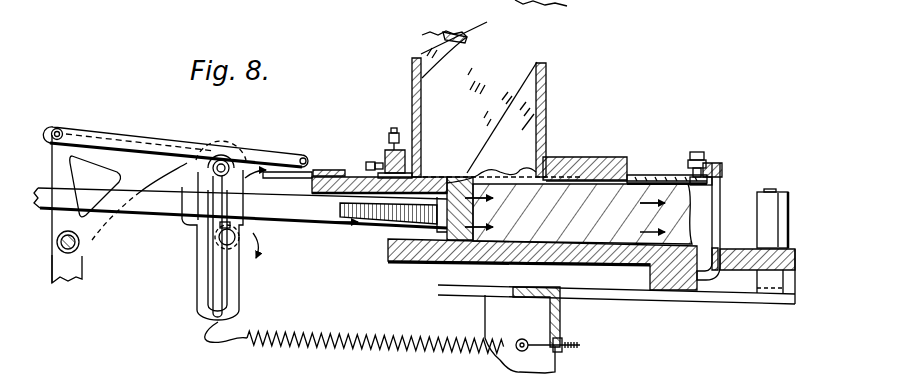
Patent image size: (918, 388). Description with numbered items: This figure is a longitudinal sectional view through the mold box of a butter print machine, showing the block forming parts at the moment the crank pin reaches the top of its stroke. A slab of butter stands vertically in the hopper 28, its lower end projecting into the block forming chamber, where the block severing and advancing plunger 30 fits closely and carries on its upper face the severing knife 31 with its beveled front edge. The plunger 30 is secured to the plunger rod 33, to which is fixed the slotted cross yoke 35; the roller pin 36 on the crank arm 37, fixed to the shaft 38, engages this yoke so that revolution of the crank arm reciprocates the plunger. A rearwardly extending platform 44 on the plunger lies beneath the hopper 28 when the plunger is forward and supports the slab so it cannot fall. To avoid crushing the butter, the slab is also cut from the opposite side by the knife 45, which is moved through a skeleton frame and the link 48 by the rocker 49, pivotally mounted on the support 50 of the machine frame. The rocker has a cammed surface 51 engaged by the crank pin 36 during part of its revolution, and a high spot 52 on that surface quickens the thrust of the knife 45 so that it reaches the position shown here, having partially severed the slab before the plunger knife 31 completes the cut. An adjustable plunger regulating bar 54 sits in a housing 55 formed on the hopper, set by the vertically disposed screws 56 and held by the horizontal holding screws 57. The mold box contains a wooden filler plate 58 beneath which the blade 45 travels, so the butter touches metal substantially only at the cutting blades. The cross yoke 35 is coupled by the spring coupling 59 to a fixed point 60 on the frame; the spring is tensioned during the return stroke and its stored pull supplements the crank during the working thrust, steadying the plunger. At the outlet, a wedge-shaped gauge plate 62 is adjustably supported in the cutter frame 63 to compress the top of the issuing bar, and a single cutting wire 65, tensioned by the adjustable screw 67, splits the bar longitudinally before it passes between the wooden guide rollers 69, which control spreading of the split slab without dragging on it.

The hopper 28 is at (412, 62).
The block severing and advancing plunger 30 is at (462, 233).
The severing knife 31 is at (480, 180).
The plunger rod 33 is at (303, 207).
The slotted cross yoke 35 is at (200, 306).
The roller pin 36 is at (214, 162).
The crank arm 37 is at (216, 252).
The shaft 38 is at (220, 238).
The platform 44 is at (350, 172).
The knife 45 is at (513, 170).
The link 48 is at (248, 153).
The rocker 49 is at (115, 158).
The support 50 is at (78, 264).
The surface 51 is at (94, 239).
The high spot 52 is at (173, 174).
The plunger regulating bar 54 is at (415, 177).
The housing 55 is at (398, 150).
The vertically disposed screws 56 is at (394, 133).
The holding screws 57 is at (372, 161).
The wooden filler plate 58 is at (560, 158).
The spring coupling 59 is at (385, 340).
The fixed point 60 is at (521, 343).
The gauge plate 62 is at (655, 176).
The cutter frame 63 is at (712, 183).
The cutting wire 65 is at (720, 166).
The adjustable screw 67 is at (698, 153).
The guide rollers 69 is at (762, 192).